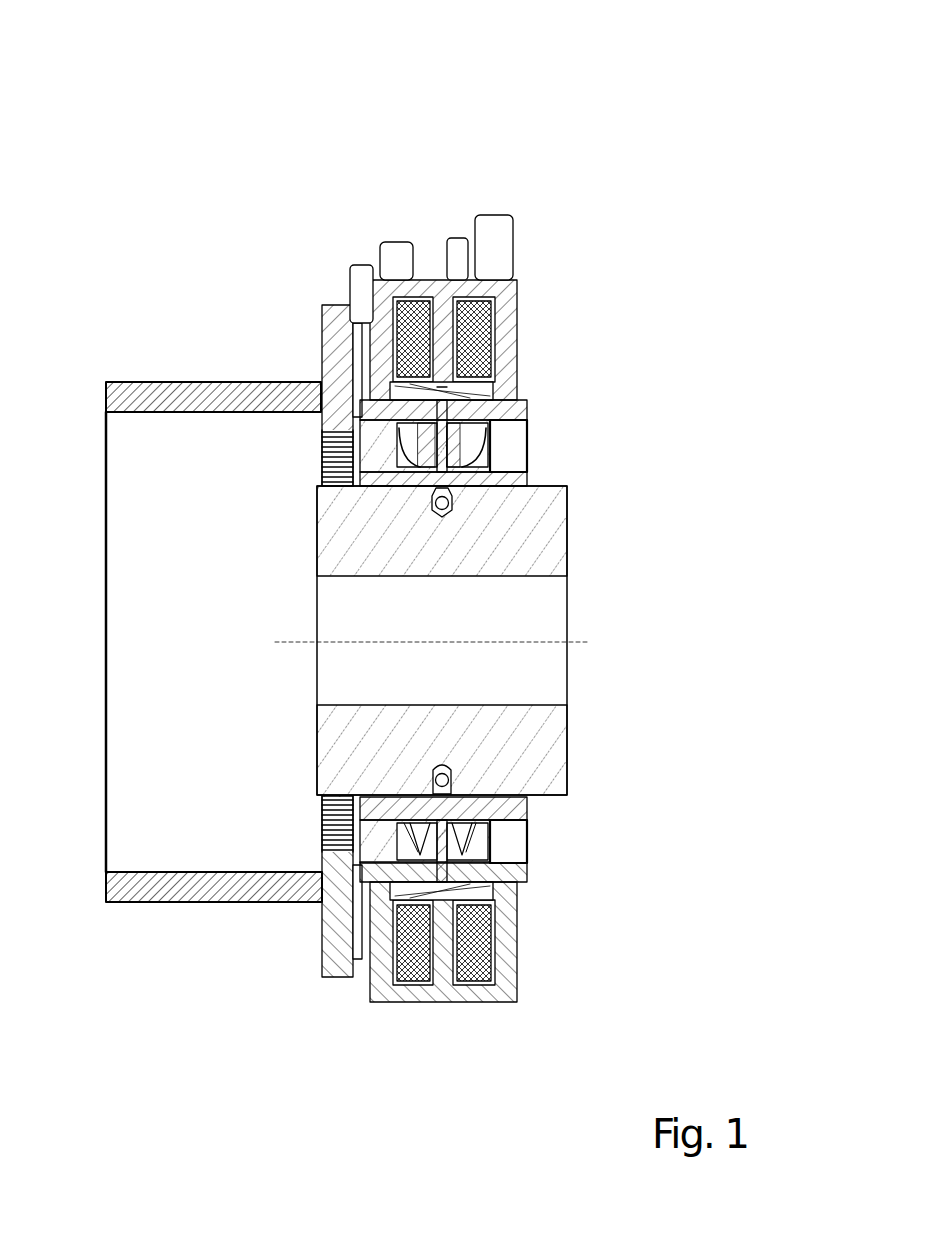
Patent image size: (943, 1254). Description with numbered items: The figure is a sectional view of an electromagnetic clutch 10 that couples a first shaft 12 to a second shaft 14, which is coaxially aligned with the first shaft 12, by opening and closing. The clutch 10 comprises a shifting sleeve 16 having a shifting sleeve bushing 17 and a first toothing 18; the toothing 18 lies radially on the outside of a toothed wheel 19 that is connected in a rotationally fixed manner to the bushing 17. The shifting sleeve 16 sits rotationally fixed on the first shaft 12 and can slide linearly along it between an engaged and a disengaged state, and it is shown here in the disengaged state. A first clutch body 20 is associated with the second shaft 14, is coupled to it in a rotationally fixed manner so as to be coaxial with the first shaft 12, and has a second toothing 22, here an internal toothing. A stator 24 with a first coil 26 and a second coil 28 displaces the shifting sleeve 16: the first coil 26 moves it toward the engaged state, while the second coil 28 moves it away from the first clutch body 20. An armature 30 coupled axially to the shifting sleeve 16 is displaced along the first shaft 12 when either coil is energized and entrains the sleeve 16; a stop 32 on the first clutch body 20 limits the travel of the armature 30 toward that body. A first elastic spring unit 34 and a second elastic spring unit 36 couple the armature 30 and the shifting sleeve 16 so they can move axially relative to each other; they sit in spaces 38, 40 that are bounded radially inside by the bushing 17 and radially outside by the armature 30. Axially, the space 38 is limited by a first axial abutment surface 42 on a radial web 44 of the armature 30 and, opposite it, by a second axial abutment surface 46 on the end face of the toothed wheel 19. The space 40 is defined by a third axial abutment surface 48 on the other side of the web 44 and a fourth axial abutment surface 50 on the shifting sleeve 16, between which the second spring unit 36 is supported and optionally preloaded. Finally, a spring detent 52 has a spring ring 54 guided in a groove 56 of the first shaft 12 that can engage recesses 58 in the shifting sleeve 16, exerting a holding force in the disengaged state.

The electromagnetic clutch 10 is at (145, 130).
The first shaft 12 is at (352, 568).
The second shaft 14 is at (138, 392).
The shifting sleeve 16 is at (386, 535).
The shifting sleeve bushing 17 is at (370, 486).
The first toothing 18 is at (337, 430).
The toothed wheel 19 is at (363, 405).
The first clutch body 20 is at (340, 328).
The second toothing 22 is at (340, 467).
The stator 24 is at (440, 390).
The first coil 26 is at (415, 320).
The second coil 28 is at (487, 320).
The armature 30 is at (377, 445).
The stop 32 is at (338, 408).
The first elastic spring unit 34 is at (370, 496).
The second elastic spring unit 36 is at (470, 455).
The space 38 is at (427, 415).
The space 40 is at (468, 410).
The first axial abutment surface 42 is at (425, 450).
The radial web 44 is at (444, 200).
The second axial abutment surface 46 is at (405, 458).
The third axial abutment surface 48 is at (440, 510).
The fourth axial abutment surface 50 is at (473, 445).
The spring detent 52 is at (423, 532).
The spring ring 54 is at (448, 503).
The groove 56 is at (447, 515).
The recesses 58 is at (478, 490).